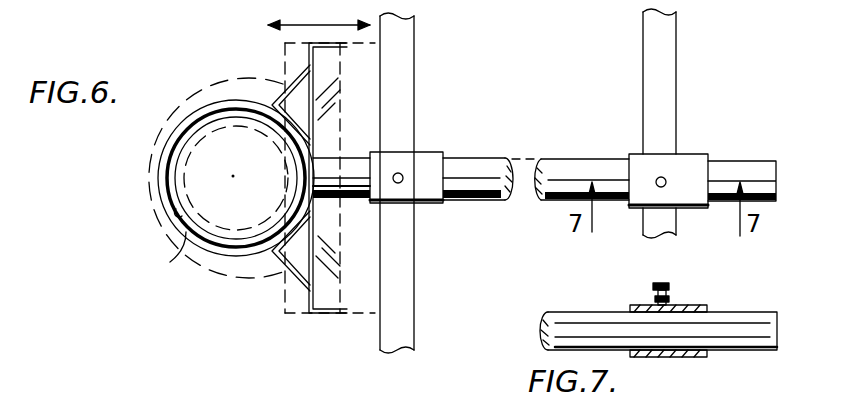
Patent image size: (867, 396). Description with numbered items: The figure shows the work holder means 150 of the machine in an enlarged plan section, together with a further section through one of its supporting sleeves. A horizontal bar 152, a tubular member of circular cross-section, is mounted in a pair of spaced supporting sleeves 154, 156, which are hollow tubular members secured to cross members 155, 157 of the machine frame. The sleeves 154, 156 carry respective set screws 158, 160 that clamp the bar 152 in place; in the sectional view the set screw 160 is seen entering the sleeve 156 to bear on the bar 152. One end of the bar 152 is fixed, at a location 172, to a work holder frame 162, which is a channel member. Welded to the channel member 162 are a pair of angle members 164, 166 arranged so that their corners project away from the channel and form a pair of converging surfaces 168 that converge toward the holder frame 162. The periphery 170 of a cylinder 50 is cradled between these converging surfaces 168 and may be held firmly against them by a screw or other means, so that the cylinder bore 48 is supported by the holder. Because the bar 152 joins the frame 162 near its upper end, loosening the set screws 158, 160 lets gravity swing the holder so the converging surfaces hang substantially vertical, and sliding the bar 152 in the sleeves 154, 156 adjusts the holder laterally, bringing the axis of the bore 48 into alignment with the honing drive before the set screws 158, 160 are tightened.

In FIG. 6, the cylinder bore 48 is at (183, 226).
In FIG. 6, the cylinder 50 is at (186, 240).
In FIG. 6, the work holder means 150 is at (320, 242).
In FIG. 6, the horizontal bar 152 is at (487, 160).
In FIG. 7, the horizontal bar 152 is at (595, 325).
In FIG. 6, the supporting sleeve 154 is at (433, 150).
In FIG. 6, the cross member 155 is at (412, 268).
In FIG. 6, the supporting sleeve 156 is at (692, 158).
In FIG. 7, the supporting sleeve 156 is at (700, 305).
In FIG. 6, the cross member 157 is at (663, 133).
In FIG. 6, the set screw 158 is at (403, 173).
In FIG. 6, the set screw 160 is at (658, 178).
In FIG. 7, the set screw 160 is at (661, 283).
In FIG. 6, the work holder frame 162 is at (320, 152).
In FIG. 6, the angle member 164 is at (280, 98).
In FIG. 6, the angle member 166 is at (280, 258).
In FIG. 6, the converging surfaces 168 is at (283, 143).
In FIG. 6, the periphery of cylinder 170 is at (160, 134).
In FIG. 6, the connection location 172 is at (333, 196).